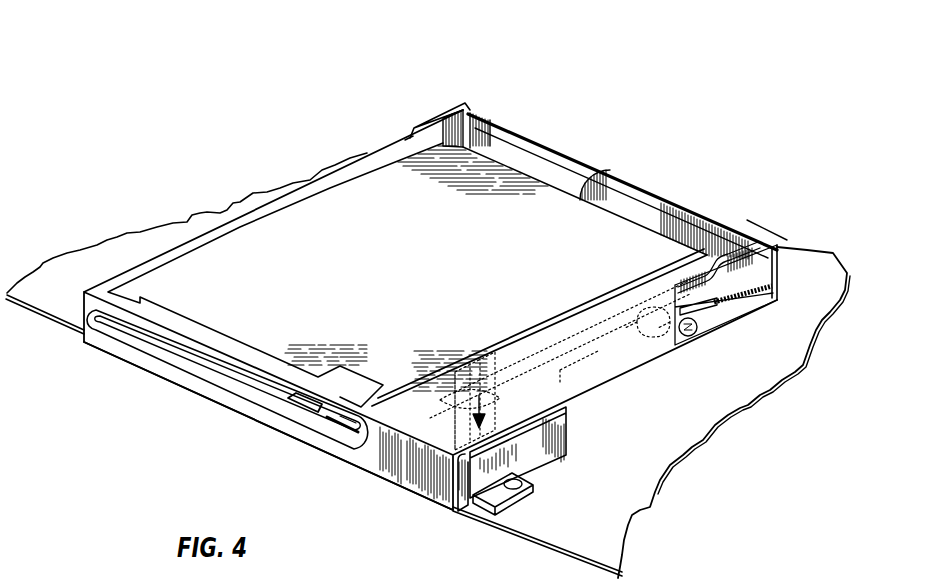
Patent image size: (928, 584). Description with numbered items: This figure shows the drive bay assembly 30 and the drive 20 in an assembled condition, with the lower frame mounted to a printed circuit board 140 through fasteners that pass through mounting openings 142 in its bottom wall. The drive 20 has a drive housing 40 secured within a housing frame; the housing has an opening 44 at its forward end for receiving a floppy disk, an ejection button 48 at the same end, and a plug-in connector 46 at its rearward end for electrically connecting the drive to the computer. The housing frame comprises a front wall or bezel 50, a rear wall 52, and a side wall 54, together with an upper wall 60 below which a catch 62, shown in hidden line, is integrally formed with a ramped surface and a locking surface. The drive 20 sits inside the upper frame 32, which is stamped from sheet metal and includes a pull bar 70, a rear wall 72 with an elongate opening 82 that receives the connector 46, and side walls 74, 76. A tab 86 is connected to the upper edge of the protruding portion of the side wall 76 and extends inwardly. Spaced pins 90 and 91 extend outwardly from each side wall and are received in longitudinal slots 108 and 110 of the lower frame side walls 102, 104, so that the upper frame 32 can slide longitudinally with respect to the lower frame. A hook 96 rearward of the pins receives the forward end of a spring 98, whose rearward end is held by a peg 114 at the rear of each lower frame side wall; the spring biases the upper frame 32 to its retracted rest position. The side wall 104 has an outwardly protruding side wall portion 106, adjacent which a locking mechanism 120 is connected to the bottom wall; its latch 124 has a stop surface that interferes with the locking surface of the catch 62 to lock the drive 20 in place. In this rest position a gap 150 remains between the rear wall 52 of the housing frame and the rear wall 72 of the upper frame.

The drive 20 is at (223, 232).
The drive bay assembly 30 is at (640, 75).
The upper frame 32 is at (479, 103).
The drive housing 40 is at (360, 210).
The opening 44 is at (120, 328).
The plug-in connector 46 is at (584, 180).
The ejection button 48 is at (288, 398).
The bezel 50 is at (346, 455).
The rear wall 52 is at (657, 220).
The side wall 54 is at (377, 153).
The upper wall 60 is at (643, 370).
The catch 62 is at (453, 373).
The pull bar 70 is at (143, 373).
The rear wall 72 is at (640, 183).
The side wall 74 is at (416, 135).
The side wall 76 is at (772, 245).
The elongate opening 82 is at (500, 133).
The tab 86 is at (447, 470).
The pin 90 is at (697, 337).
The pin 91 is at (570, 388).
The hook 96 is at (717, 330).
The spring 98 is at (740, 305).
The side wall 102 is at (450, 116).
The side wall 104 is at (603, 392).
The side wall portion 106 is at (517, 453).
The slot 108 is at (653, 310).
The slot 110 is at (497, 362).
The peg 114 is at (797, 278).
The locking mechanism 120 is at (467, 357).
The latch 124 is at (407, 433).
The printed circuit board 140 is at (655, 483).
The mounting openings 142 is at (527, 488).
The gap 150 is at (472, 108).